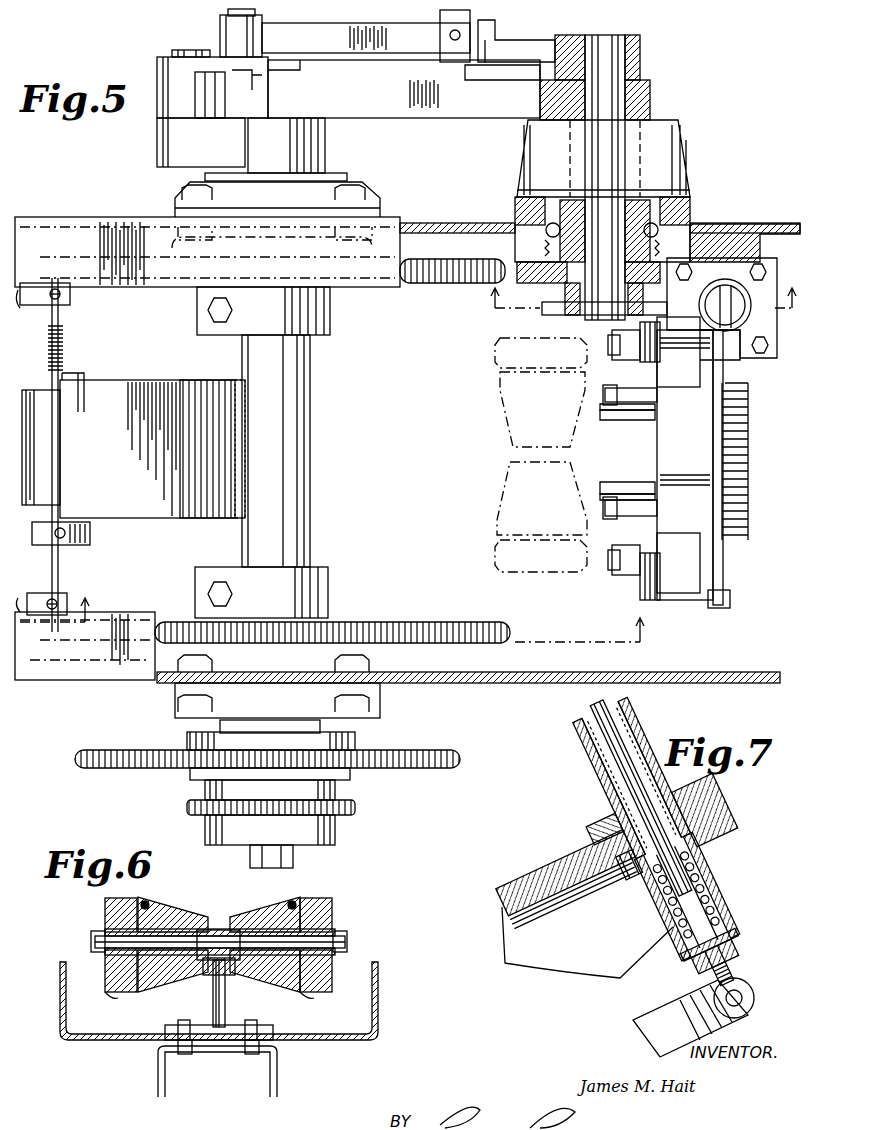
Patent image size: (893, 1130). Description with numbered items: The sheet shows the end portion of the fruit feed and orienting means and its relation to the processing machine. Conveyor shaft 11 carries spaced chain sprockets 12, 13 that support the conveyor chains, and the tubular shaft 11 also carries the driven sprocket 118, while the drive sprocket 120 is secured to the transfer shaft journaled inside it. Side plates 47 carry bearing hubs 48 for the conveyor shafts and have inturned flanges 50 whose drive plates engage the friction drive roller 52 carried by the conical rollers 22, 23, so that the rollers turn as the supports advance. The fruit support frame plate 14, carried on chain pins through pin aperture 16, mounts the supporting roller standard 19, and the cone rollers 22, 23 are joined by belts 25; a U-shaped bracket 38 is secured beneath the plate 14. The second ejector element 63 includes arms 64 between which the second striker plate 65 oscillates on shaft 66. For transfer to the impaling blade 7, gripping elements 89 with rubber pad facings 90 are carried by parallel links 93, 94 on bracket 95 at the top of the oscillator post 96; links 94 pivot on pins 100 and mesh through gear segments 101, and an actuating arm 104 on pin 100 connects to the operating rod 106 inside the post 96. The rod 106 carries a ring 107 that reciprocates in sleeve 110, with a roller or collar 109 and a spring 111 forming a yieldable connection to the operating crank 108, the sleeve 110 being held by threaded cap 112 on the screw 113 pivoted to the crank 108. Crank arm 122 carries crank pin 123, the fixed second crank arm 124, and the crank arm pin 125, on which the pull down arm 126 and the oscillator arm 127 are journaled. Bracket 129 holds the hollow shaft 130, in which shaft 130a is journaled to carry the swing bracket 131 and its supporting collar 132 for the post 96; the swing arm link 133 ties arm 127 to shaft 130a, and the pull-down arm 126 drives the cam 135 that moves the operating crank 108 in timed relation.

In FIG. 5, the impaling blade 7 is at (643, 311).
In FIG. 5, the conveyor shaft 11 is at (300, 486).
In FIG. 5, the chain sprocket 12 is at (428, 283).
In FIG. 5, the chain sprocket 13 is at (426, 622).
In FIG. 6, the fruit support frame plate 14 is at (330, 1042).
In FIG. 5, the pin aperture 16 is at (335, 607).
In FIG. 6, the supporting roller standard 19 is at (226, 1010).
In FIG. 5, the supporting cone roller 22 is at (500, 420).
In FIG. 6, the supporting cone roller 22 is at (265, 912).
In FIG. 5, the supporting cone roller 23 is at (497, 495).
In FIG. 6, the supporting cone roller 23 is at (180, 912).
In FIG. 6, the belt 25 is at (145, 903).
In FIG. 6, the U-shaped bracket 38 is at (278, 1080).
In FIG. 5, the side plate 47 is at (468, 204).
In FIG. 5, the bearing hub 48 is at (362, 712).
In FIG. 5, the inturned flange 50 is at (95, 226).
In FIG. 5, the friction drive roller 52 is at (497, 352).
In FIG. 6, the friction drive roller 52 is at (125, 992).
In FIG. 5, the second ejector element 63 is at (138, 505).
In FIG. 5, the arm 64 is at (40, 305).
In FIG. 5, the second striker plate 65 is at (213, 505).
In FIG. 5, the shaft 66 is at (62, 561).
In FIG. 5, the gripping element 89 is at (605, 432).
In FIG. 5, the resilient rubber pad facing 90 is at (645, 410).
In FIG. 5, the parallel link 93 is at (636, 403).
In FIG. 5, the parallel link 94 is at (642, 332).
In FIG. 5, the bracket 95 is at (735, 300).
In FIG. 7, the oscillator post 96 is at (632, 778).
In FIG. 5, the pin 100 is at (612, 345).
In FIG. 5, the gear segment 101 is at (712, 426).
In FIG. 5, the actuating arm 104 is at (750, 257).
In FIG. 7, the operating rod 106 is at (640, 798).
In FIG. 7, the ring 107 is at (687, 896).
In FIG. 7, the operating crank 108 is at (650, 1018).
In FIG. 7, the roller 109 is at (604, 829).
In FIG. 7, the sleeve 110 is at (686, 895).
In FIG. 7, the spring 111 is at (687, 897).
In FIG. 7, the threaded cap 112 is at (714, 956).
In FIG. 7, the screw 113 is at (722, 974).
In FIG. 5, the driven sprocket 118 is at (422, 769).
In FIG. 5, the drive sprocket 120 is at (357, 810).
In FIG. 5, the crank arm 122 is at (178, 156).
In FIG. 5, the crank pin 123 is at (262, 20).
In FIG. 5, the second crank arm 124 is at (172, 100).
In FIG. 5, the crank arm pin 125 is at (190, 50).
In FIG. 5, the pull down arm 126 is at (448, 110).
In FIG. 5, the oscillator arm 127 is at (410, 12).
In FIG. 5, the bracket 129 is at (748, 233).
In FIG. 5, the hollow shaft 130 is at (645, 196).
In FIG. 5, the shaft 130a is at (605, 213).
In FIG. 7, the swing bracket 131 is at (568, 879).
In FIG. 7, the supporting collar 132 is at (632, 777).
In FIG. 5, the swing arm link 133 is at (518, 40).
In FIG. 5, the cam 135 is at (554, 305).